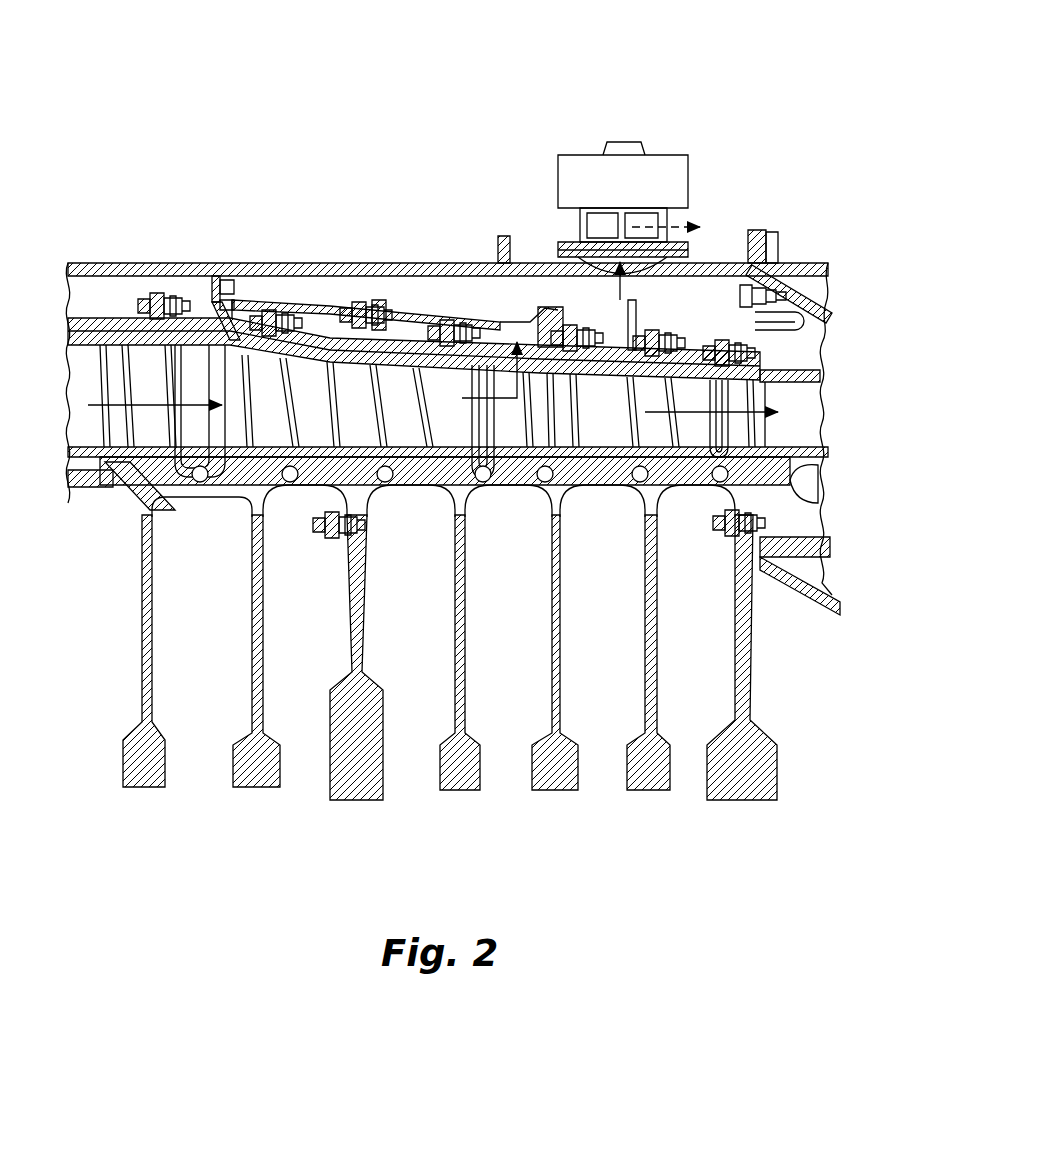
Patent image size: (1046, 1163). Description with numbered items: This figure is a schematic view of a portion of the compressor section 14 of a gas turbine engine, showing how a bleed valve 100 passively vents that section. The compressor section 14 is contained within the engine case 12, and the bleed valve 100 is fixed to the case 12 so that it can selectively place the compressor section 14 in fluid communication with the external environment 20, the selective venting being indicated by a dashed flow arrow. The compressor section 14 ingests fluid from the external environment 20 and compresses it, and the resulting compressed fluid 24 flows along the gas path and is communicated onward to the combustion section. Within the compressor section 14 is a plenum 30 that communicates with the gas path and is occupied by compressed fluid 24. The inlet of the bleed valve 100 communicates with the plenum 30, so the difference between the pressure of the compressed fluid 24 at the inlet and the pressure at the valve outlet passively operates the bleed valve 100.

The case 12 is at (220, 274).
The compressor section 14 is at (158, 834).
The external environment 20 is at (742, 38).
The compressed fluid 24 is at (519, 333).
The plenum 30 is at (402, 296).
The bleed valve 100 is at (580, 118).